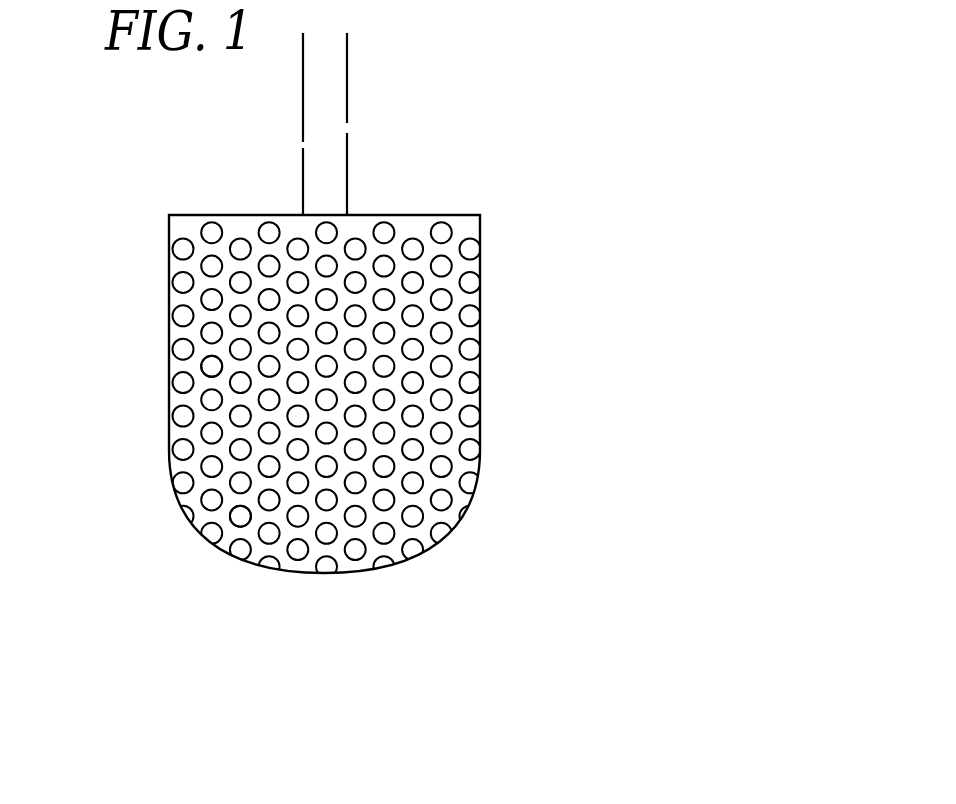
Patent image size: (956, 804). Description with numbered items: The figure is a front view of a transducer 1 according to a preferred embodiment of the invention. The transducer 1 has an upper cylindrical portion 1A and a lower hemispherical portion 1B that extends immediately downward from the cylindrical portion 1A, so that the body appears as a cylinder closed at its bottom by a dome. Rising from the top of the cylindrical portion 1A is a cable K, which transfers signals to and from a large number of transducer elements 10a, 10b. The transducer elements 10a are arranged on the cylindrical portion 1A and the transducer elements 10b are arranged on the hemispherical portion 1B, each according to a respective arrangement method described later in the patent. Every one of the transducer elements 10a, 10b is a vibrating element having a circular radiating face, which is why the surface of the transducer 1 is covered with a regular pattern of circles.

The transducer 1 is at (436, 169).
The cable K is at (303, 130).
The cylindrical portion 1A is at (523, 212).
The hemispherical portion 1B is at (523, 430).
The transducer element 10a is at (211, 364).
The transducer element 10b is at (258, 517).